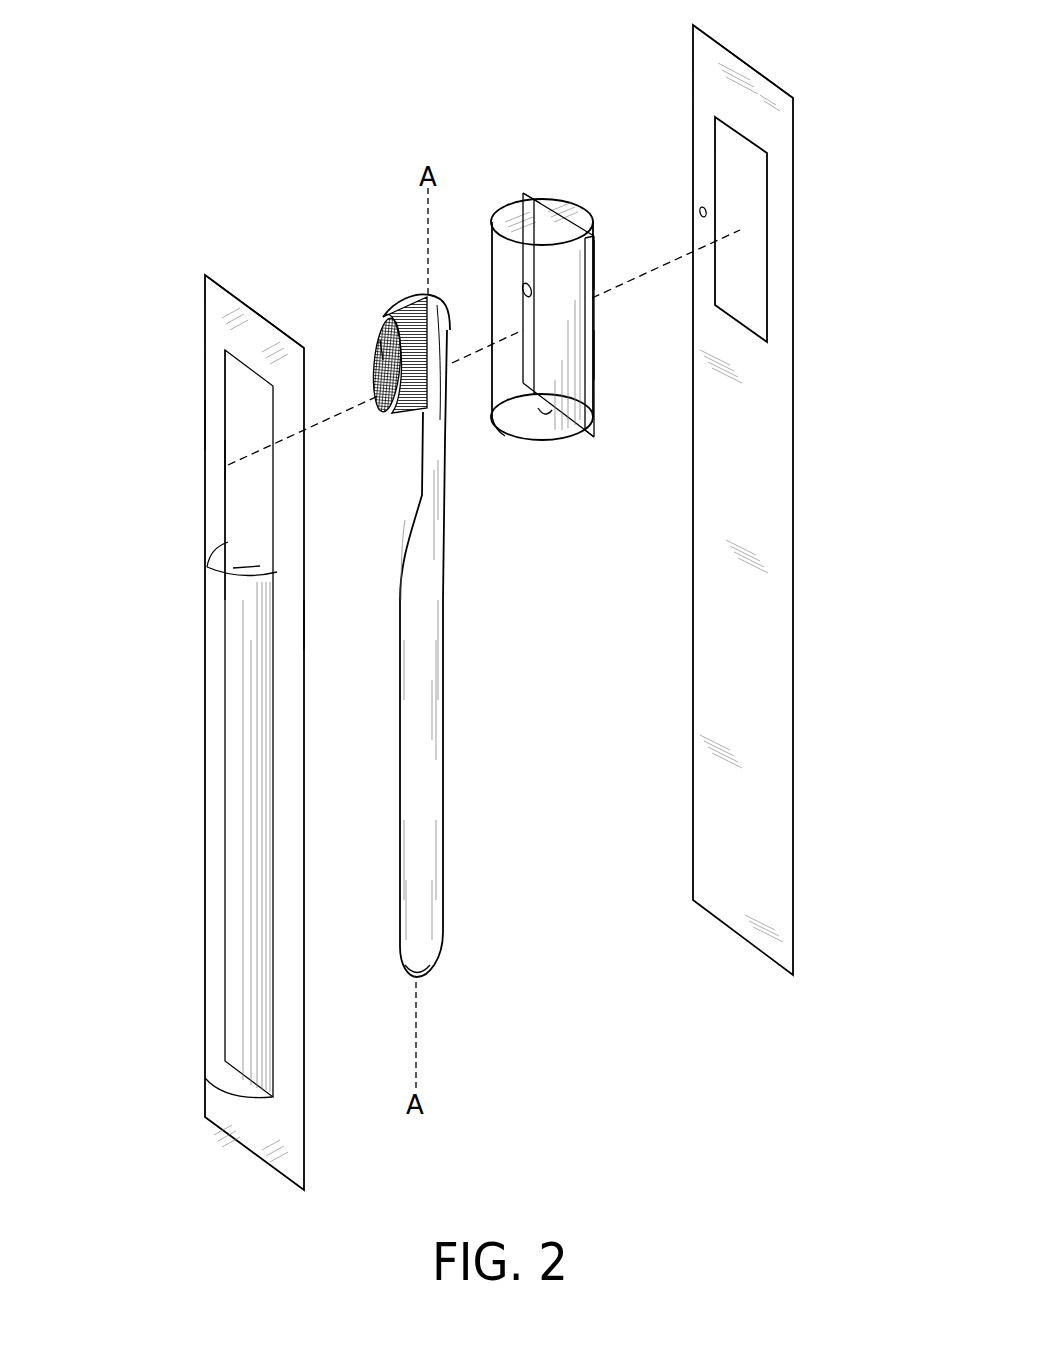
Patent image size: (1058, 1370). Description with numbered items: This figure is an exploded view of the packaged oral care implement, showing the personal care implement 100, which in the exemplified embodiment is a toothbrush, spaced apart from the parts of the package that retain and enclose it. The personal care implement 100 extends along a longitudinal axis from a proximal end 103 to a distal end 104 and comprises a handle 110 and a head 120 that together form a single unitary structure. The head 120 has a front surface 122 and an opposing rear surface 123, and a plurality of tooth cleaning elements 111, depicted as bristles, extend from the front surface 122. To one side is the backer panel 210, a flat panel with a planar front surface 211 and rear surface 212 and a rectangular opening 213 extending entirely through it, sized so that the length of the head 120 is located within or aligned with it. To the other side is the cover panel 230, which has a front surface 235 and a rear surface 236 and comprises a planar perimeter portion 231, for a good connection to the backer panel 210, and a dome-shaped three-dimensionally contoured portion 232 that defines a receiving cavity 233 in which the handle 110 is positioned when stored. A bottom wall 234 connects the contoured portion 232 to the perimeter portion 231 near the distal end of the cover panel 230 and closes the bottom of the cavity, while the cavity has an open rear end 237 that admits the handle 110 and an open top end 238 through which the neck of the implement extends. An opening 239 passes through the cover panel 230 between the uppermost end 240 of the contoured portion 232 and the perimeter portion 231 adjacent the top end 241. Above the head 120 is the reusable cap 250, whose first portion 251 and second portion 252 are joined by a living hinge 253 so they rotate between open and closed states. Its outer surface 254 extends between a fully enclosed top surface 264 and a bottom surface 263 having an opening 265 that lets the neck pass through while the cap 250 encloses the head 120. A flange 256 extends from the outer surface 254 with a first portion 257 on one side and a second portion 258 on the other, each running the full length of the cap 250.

The personal care implement 100 is at (419, 605).
The proximal end 103 is at (417, 978).
The distal end 104 is at (417, 308).
The handle 110 is at (413, 872).
The tooth cleaning elements 111 is at (383, 342).
The head 120 is at (434, 318).
The front surface 122 is at (398, 333).
The rear surface 123 is at (440, 333).
The backer panel 210 is at (786, 500).
The front surface 211 is at (754, 674).
The rear surface 212 is at (794, 162).
The opening 213 is at (744, 243).
The cover panel 230 is at (203, 425).
The perimeter portion 231 is at (288, 1040).
The three-dimensionally contoured portion 232 is at (240, 830).
The receiving cavity 233 is at (245, 560).
The bottom wall 234 is at (240, 1080).
The front surface 235 is at (218, 334).
The rear surface 236 is at (305, 622).
The open rear end 237 is at (233, 568).
The open top end 238 is at (260, 565).
The opening 239 is at (232, 463).
The uppermost end 240 is at (205, 577).
The top end 241 is at (258, 310).
The cap 250 is at (560, 304).
The first portion 251 is at (527, 428).
The second portion 252 is at (583, 223).
The hinge 253 is at (600, 360).
The outer surface 254 is at (498, 293).
The flange 256 is at (596, 444).
The first portion 257 is at (598, 262).
The second portion 258 is at (522, 192).
The bottom surface 263 is at (498, 427).
The top surface 264 is at (538, 217).
The opening 265 is at (550, 410).